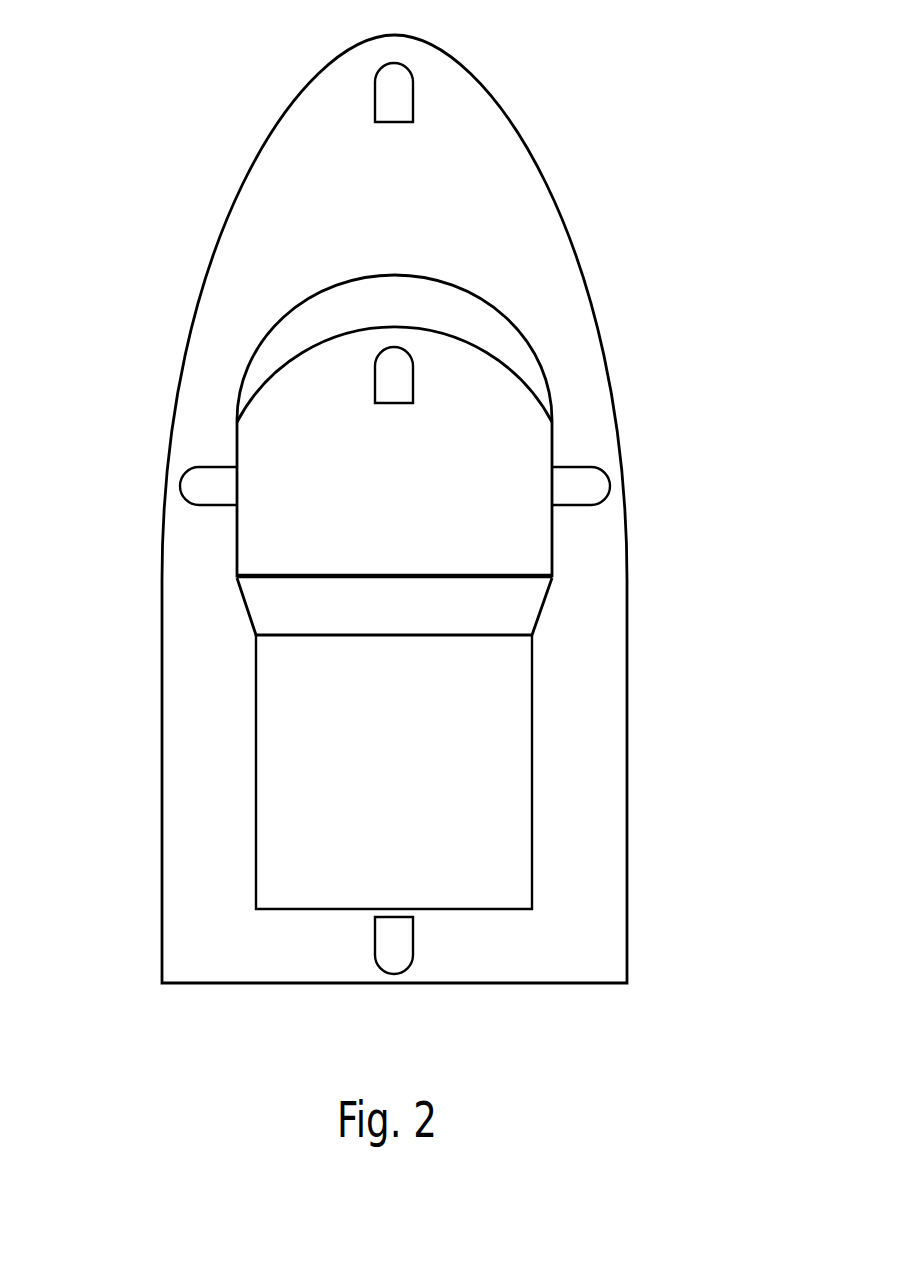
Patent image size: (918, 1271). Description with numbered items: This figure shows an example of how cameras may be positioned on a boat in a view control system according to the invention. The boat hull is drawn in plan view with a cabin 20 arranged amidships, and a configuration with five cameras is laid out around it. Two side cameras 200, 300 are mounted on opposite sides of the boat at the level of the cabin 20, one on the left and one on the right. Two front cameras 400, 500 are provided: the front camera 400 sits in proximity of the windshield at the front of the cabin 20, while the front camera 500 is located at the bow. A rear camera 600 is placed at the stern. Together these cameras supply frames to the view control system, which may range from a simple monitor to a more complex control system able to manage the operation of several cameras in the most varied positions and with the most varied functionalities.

The cabin 20 is at (372, 302).
The side camera 200 is at (212, 480).
The side camera 300 is at (580, 478).
The front camera 400 is at (388, 357).
The front camera 500 is at (397, 88).
The rear camera 600 is at (392, 940).